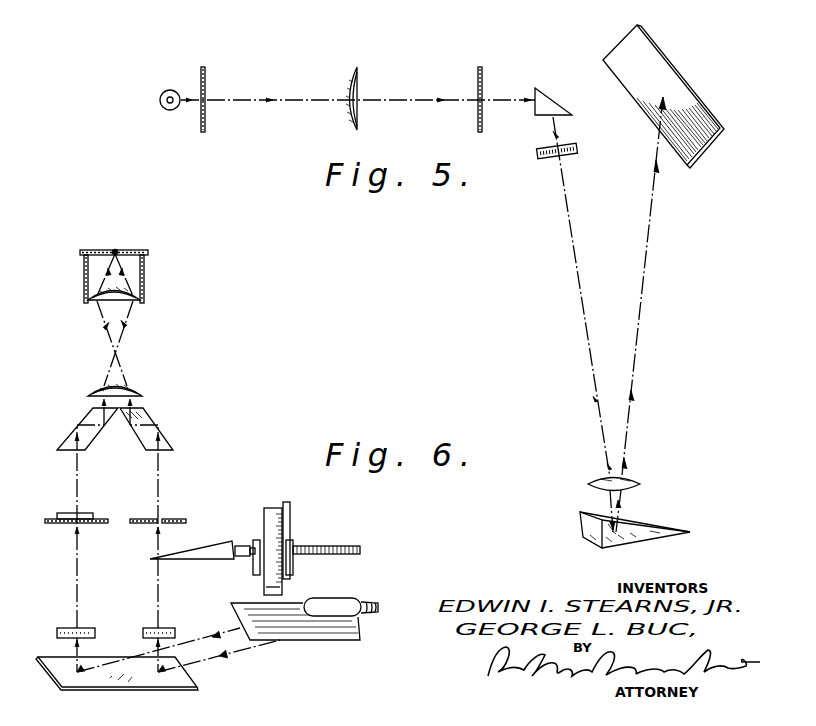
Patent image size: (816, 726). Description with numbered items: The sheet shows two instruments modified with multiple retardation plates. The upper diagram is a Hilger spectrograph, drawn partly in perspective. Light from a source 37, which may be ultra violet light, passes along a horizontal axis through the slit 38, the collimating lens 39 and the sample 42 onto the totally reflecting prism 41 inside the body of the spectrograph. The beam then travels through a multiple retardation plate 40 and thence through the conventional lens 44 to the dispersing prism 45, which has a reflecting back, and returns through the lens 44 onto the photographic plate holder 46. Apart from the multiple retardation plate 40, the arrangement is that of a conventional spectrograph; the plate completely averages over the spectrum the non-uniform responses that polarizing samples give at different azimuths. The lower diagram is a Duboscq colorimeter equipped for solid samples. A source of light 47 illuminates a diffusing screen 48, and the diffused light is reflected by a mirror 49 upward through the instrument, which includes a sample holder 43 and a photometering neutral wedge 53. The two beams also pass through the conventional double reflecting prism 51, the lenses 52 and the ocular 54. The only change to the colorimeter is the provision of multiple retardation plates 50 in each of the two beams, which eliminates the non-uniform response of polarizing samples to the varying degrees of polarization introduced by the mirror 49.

In FIG. 5, the source 37 is at (160, 98).
In FIG. 5, the slit 38 is at (205, 100).
In FIG. 5, the collimating lens 39 is at (352, 90).
In FIG. 5, the sample 42 is at (478, 100).
In FIG. 5, the totally reflecting prism 41 is at (548, 95).
In FIG. 5, the multiple retardation plate 40 is at (572, 154).
In FIG. 5, the photographic plate holder 46 is at (670, 63).
In FIG. 5, the conventional lens 44 is at (624, 484).
In FIG. 5, the dispersing prism 45 is at (665, 527).
In FIG. 6, the ocular 54 is at (115, 250).
In FIG. 6, the lenses 52 is at (118, 303).
In FIG. 6, the double reflecting prism 51 is at (92, 408).
In FIG. 6, the sample holder 43 is at (48, 515).
In FIG. 6, the multiple retardation plates 50 is at (143, 632).
In FIG. 6, the mirror 49 is at (190, 680).
In FIG. 6, the photometering neutral wedge 53 is at (208, 552).
In FIG. 6, the diffusing screen 48 is at (328, 641).
In FIG. 6, the source of light 47 is at (342, 600).